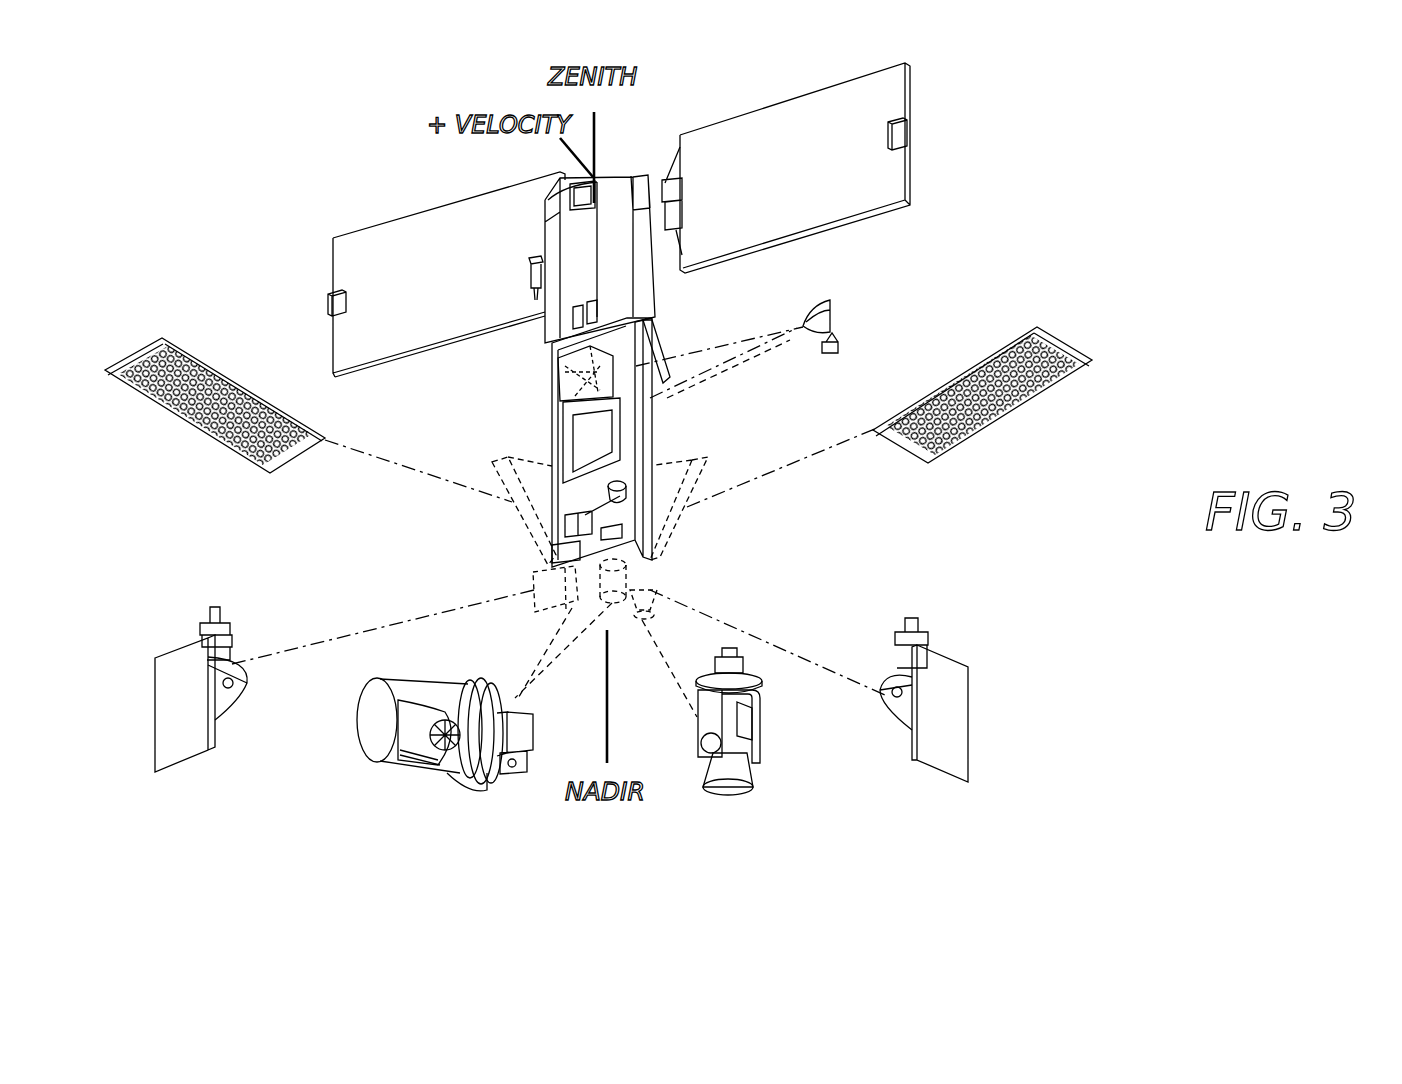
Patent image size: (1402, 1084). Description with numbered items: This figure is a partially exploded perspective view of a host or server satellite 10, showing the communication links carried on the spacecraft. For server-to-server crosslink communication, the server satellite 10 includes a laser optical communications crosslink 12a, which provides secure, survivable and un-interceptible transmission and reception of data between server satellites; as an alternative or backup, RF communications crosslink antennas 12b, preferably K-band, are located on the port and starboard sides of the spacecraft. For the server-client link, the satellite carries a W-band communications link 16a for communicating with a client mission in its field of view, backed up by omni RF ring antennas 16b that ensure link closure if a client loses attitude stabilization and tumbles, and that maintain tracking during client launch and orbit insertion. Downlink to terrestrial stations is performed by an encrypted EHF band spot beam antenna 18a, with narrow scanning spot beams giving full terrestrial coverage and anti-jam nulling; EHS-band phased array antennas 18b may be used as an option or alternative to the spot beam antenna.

The server satellite 10 is at (978, 201).
The laser optical communications crosslink 12a is at (430, 687).
The RF communications crosslink antennas 12b is at (215, 717).
The W-band communications link 16a is at (205, 364).
The omni RF ring antennas 16b is at (840, 317).
The EHF band spot beam antenna 18a is at (758, 745).
The EHS-band phased array antennas 18b is at (992, 352).